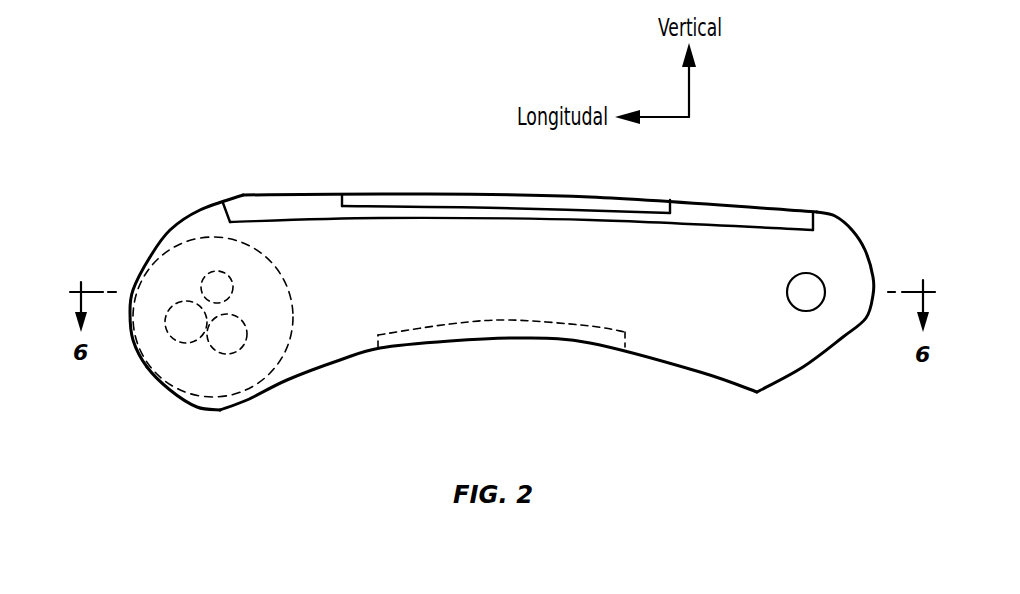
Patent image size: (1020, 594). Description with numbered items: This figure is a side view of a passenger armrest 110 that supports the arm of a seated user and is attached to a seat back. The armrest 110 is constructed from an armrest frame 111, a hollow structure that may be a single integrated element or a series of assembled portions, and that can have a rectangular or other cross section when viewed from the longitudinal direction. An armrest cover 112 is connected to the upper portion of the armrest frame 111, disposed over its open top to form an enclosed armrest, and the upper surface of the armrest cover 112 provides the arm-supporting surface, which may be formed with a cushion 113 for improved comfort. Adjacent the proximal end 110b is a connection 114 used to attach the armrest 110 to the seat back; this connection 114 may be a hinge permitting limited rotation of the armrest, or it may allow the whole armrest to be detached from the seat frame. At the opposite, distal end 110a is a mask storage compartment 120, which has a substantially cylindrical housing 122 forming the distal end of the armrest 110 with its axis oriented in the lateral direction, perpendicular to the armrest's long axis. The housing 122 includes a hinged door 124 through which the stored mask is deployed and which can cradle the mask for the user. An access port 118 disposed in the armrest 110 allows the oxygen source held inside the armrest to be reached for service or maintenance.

The passenger armrest 110 is at (470, 294).
The distal end 110a is at (145, 363).
The proximal end 110b is at (868, 313).
The armrest frame 111 is at (469, 345).
The armrest cover 112 is at (280, 207).
The cushion 113 is at (460, 200).
The connection 114 is at (806, 290).
The access port 118 is at (500, 322).
The mask storage compartment 120 is at (185, 233).
The housing 122 is at (302, 380).
The door 124 is at (170, 388).